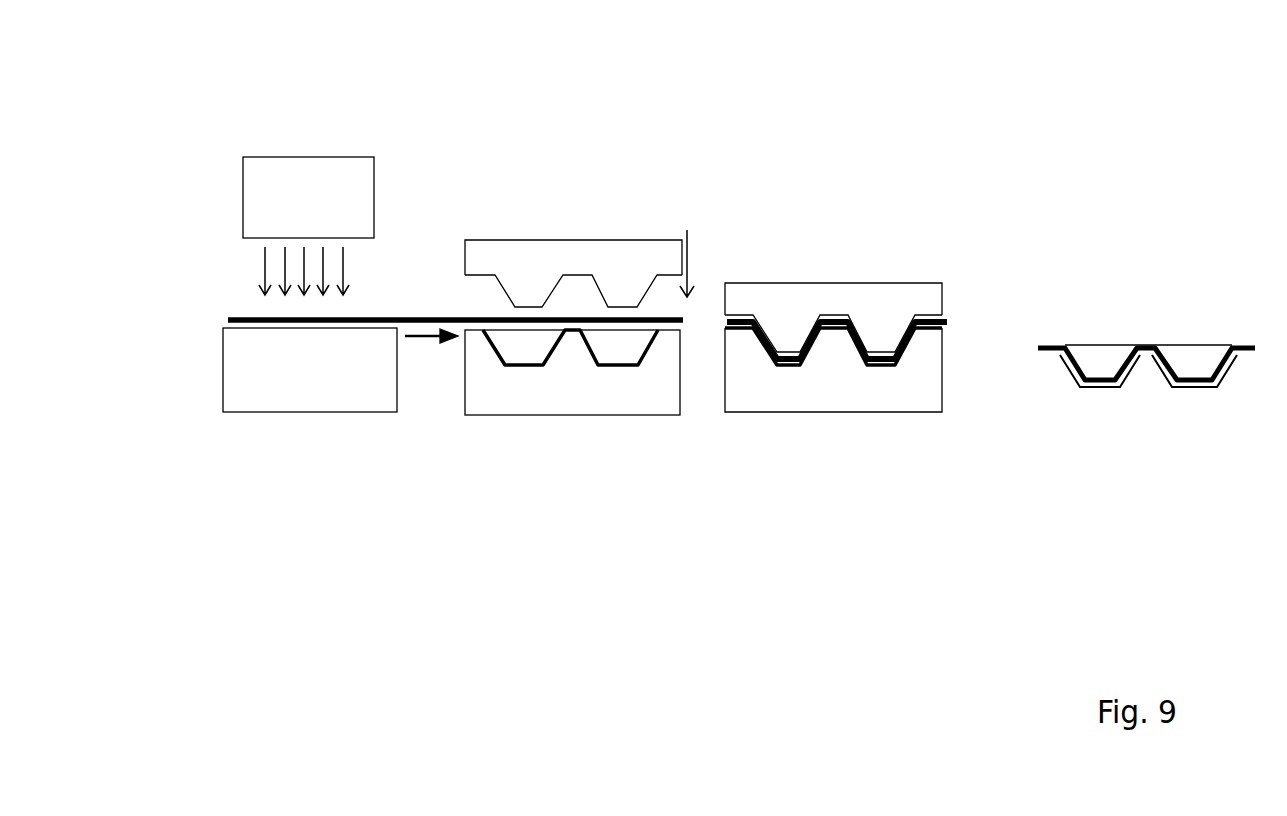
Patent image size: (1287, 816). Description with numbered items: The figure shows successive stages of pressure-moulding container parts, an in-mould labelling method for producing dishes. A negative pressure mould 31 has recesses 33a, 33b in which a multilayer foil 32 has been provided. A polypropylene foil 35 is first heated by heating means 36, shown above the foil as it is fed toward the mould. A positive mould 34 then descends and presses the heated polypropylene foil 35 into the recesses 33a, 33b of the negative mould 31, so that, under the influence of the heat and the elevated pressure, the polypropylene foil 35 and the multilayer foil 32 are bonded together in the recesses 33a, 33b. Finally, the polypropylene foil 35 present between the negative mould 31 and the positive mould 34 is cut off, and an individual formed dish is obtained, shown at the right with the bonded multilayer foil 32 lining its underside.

The pressure mould 31 is at (573, 393).
The multilayer foil 32 is at (618, 363).
The recess 33a is at (623, 348).
The recess 33b is at (525, 342).
The positive mould 34 is at (615, 257).
The polypropylene foil 35 is at (423, 317).
The heating means 36 is at (328, 172).